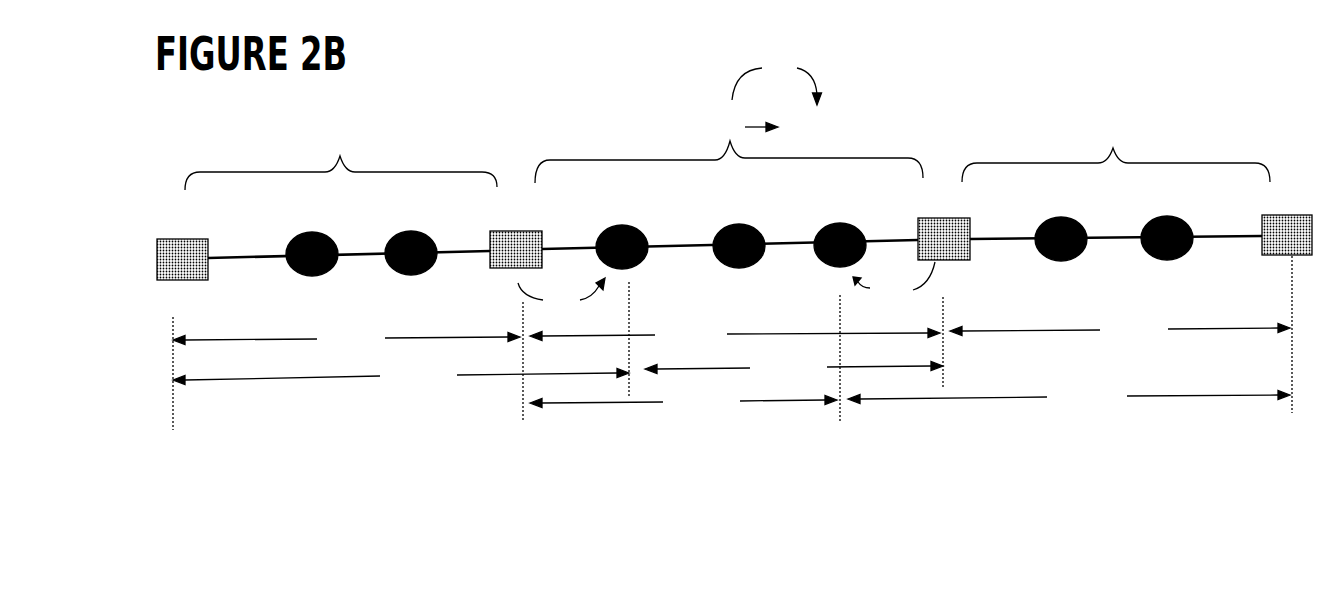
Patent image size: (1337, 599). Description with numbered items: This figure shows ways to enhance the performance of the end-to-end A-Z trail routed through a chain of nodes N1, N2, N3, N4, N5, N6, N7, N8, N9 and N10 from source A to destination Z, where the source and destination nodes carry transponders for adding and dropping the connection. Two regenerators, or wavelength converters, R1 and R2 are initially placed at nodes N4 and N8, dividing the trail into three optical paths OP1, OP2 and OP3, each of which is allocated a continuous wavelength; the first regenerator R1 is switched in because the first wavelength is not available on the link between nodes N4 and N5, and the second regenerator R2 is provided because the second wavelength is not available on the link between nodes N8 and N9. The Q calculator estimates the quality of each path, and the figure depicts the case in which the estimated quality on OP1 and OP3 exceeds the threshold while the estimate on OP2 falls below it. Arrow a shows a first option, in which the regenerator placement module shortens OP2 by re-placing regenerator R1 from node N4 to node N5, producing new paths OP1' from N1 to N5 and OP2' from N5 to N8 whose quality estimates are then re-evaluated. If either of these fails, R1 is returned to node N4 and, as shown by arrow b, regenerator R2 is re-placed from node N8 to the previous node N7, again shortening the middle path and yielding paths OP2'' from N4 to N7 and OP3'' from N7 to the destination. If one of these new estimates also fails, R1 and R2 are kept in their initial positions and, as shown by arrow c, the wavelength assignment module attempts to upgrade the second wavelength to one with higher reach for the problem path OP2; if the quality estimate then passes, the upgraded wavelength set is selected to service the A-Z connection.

The source node N1 is at (179, 274).
The intermediate node N2 is at (312, 238).
The intermediate node N3 is at (412, 237).
The regenerator node N4 is at (516, 232).
The intermediate node N5 is at (622, 229).
The intermediate node N6 is at (739, 232).
The intermediate node N7 is at (840, 234).
The regenerator node N8 is at (944, 227).
The intermediate node N9 is at (1061, 223).
The intermediate node N10 is at (1167, 227).
The source end of the trail A is at (181, 260).
The first regenerator R1 is at (515, 250).
The second regenerator R2 is at (943, 239).
The destination end of the trail Z is at (1287, 235).
The regenerator re-placement option a is at (561, 295).
The regenerator re-placement option b is at (894, 283).
The wavelength upgrade option c is at (777, 81).
The first optical path OP1 is at (346, 332).
The second optical path OP2 is at (735, 325).
The third optical path OP3 is at (1120, 316).
The shortened first optical path OP1' is at (401, 374).
The shortened second optical path OP2' is at (794, 369).
The shortened second optical path OP2'' is at (683, 403).
The extended third optical path OP3'' is at (1069, 397).